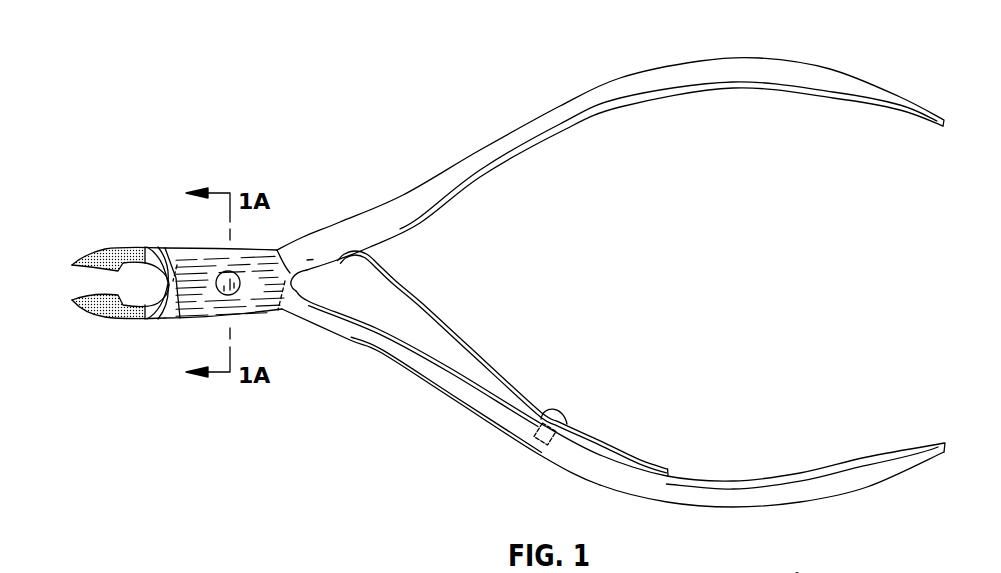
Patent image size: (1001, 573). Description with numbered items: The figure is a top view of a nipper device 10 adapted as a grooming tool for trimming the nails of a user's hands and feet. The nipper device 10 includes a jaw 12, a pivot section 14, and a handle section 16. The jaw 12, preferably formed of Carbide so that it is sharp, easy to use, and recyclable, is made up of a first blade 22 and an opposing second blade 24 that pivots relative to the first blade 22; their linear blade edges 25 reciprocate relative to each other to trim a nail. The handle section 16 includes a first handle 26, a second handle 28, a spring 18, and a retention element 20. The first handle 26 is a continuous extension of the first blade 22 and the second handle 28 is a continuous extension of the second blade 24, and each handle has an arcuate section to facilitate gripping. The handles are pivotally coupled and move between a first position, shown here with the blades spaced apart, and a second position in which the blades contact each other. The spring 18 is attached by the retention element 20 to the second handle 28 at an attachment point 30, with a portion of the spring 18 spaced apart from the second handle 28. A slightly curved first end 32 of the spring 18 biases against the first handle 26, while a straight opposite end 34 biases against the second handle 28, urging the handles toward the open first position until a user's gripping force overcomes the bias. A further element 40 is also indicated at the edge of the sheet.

The nipper device 10 is at (232, 93).
The jaw 12 is at (121, 339).
The pivot section 14 is at (270, 339).
The handle section 16 is at (437, 422).
The spring 18 is at (453, 328).
The retention element 20 is at (553, 410).
The first blade 22 is at (88, 294).
The second blade 24 is at (90, 277).
The jaw tips / cutting edges 25 is at (63, 215).
The first handle 26 is at (634, 76).
The second handle 28 is at (690, 492).
The attachment point 30 is at (537, 441).
The first end 32 is at (409, 248).
The opposite end 34 is at (665, 448).
The element of FIG. 1A (partial) 40 is at (798, 572).